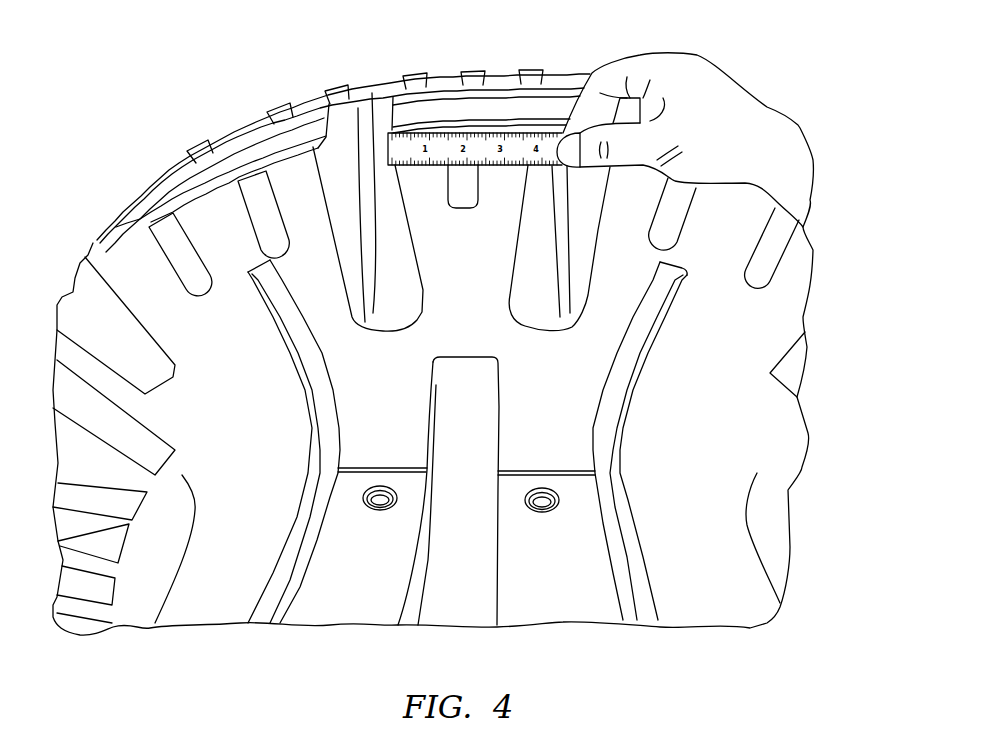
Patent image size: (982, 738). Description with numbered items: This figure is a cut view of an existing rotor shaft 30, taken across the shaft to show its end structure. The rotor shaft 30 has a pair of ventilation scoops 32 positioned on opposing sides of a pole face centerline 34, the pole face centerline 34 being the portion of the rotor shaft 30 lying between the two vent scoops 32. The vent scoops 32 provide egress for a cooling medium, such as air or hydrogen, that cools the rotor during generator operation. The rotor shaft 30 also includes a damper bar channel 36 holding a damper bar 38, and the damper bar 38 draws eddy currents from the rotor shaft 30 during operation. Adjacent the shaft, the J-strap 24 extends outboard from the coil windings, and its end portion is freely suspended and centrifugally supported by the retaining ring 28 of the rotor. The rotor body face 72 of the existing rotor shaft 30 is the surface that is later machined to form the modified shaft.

The J-strap 24 is at (447, 590).
The retaining ring 28 is at (315, 105).
The rotor shaft 30 is at (717, 348).
The ventilation scoops 32 is at (538, 302).
The pole face centerline 34 is at (505, 188).
The damper bar channel 36 is at (531, 172).
The damper bar 38 is at (460, 185).
The rotor body face 72 is at (293, 183).